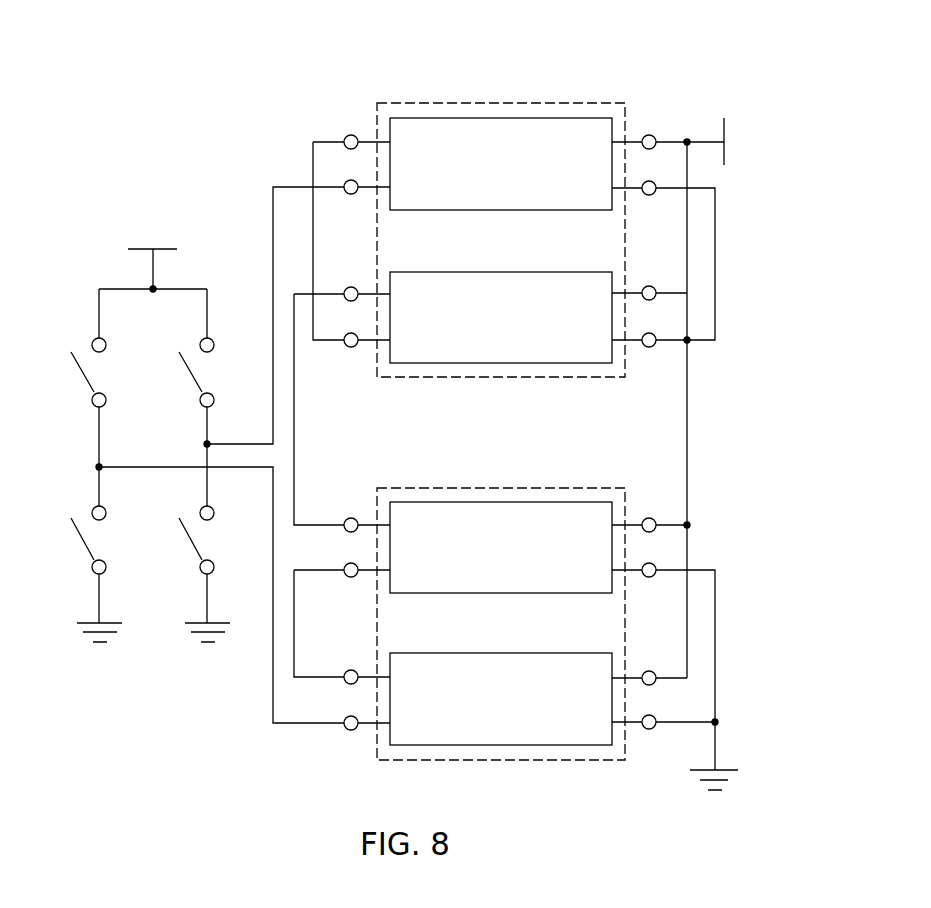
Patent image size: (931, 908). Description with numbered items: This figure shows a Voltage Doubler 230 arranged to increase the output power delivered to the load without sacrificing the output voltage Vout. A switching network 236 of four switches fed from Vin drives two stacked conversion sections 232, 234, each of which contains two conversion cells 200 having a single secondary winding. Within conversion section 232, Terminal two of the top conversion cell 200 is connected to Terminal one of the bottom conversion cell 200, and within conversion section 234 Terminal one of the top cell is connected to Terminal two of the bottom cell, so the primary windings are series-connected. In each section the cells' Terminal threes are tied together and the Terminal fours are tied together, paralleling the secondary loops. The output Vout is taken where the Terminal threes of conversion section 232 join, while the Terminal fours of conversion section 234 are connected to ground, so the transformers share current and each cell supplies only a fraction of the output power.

The Voltage Doubler 230 is at (104, 76).
The switching network 236 is at (104, 244).
The conversion section 232 is at (498, 103).
The conversion section 234 is at (498, 488).
The conversion cell 200 is at (500, 212).